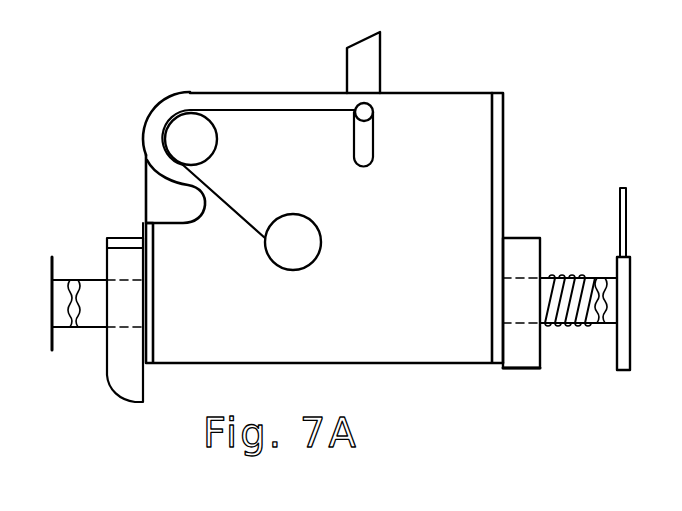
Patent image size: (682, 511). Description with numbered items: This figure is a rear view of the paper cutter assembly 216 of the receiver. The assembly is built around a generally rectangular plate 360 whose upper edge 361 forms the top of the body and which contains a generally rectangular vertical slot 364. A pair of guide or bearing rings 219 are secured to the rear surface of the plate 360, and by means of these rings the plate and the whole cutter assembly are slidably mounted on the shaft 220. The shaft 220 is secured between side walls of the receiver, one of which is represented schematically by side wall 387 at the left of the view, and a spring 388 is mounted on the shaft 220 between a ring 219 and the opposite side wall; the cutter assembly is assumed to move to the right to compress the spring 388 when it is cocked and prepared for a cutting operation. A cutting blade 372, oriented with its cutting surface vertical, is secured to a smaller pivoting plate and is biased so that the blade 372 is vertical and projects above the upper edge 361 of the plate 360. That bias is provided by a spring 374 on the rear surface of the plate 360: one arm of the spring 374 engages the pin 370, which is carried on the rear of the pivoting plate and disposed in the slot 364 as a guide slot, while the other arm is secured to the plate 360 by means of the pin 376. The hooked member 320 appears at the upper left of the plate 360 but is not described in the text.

The paper cutter assembly 216 is at (340, 206).
The hook arm 320 is at (185, 127).
The spring 374 is at (238, 113).
The cutting blade 372 is at (367, 62).
The upper edge 361 is at (453, 92).
The rectangular plate 360 is at (470, 113).
The pin 370 is at (377, 132).
The vertical slot 364 is at (375, 170).
The pin 376 is at (303, 242).
The side wall 387 is at (53, 260).
The spring 388 is at (545, 277).
The shaft 220 is at (613, 250).
The guide or bearing rings 219 is at (530, 367).